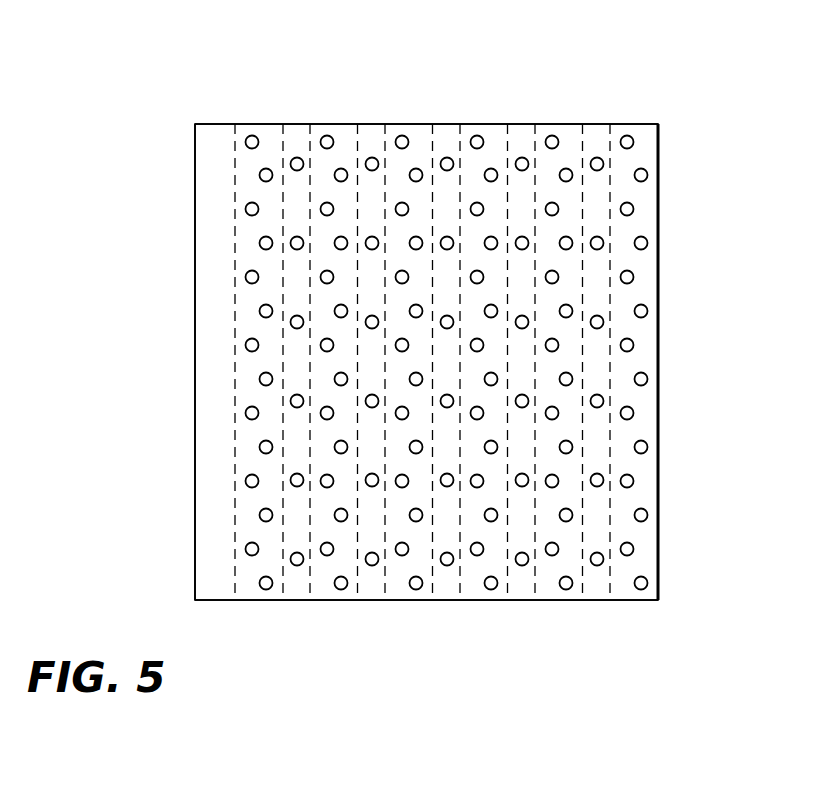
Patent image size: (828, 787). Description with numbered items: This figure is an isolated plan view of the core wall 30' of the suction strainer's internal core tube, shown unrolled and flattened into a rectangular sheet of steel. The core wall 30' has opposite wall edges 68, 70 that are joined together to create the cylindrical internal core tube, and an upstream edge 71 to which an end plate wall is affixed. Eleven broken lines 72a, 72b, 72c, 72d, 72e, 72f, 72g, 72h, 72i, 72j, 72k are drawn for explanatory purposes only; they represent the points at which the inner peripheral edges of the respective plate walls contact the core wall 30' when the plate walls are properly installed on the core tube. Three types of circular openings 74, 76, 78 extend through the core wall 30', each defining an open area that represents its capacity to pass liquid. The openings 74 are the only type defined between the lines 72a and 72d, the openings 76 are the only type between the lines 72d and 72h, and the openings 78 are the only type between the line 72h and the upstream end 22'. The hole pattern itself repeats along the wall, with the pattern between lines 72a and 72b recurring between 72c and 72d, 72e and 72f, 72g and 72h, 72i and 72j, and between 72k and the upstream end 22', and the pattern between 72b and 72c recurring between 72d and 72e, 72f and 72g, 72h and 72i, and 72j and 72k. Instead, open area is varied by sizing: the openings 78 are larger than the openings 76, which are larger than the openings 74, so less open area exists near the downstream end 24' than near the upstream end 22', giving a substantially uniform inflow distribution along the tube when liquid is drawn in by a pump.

The upstream end 22' is at (497, 362).
The downstream end 24' is at (124, 362).
The core wall 30' is at (402, 306).
The wall edge 68 is at (210, 124).
The wall edge 70 is at (211, 600).
The upstream edge 71 is at (660, 217).
The broken line 72a is at (240, 572).
The broken line 72b is at (285, 140).
The broken line 72c is at (308, 586).
The broken line 72d is at (360, 140).
The broken line 72e is at (417, 586).
The broken line 72f is at (435, 140).
The broken line 72g is at (462, 586).
The broken line 72h is at (511, 140).
The broken line 72i is at (540, 586).
The broken line 72j is at (586, 140).
The broken line 72k is at (612, 586).
The openings 74 is at (252, 135).
The openings 76 is at (416, 168).
The openings 78 is at (524, 158).